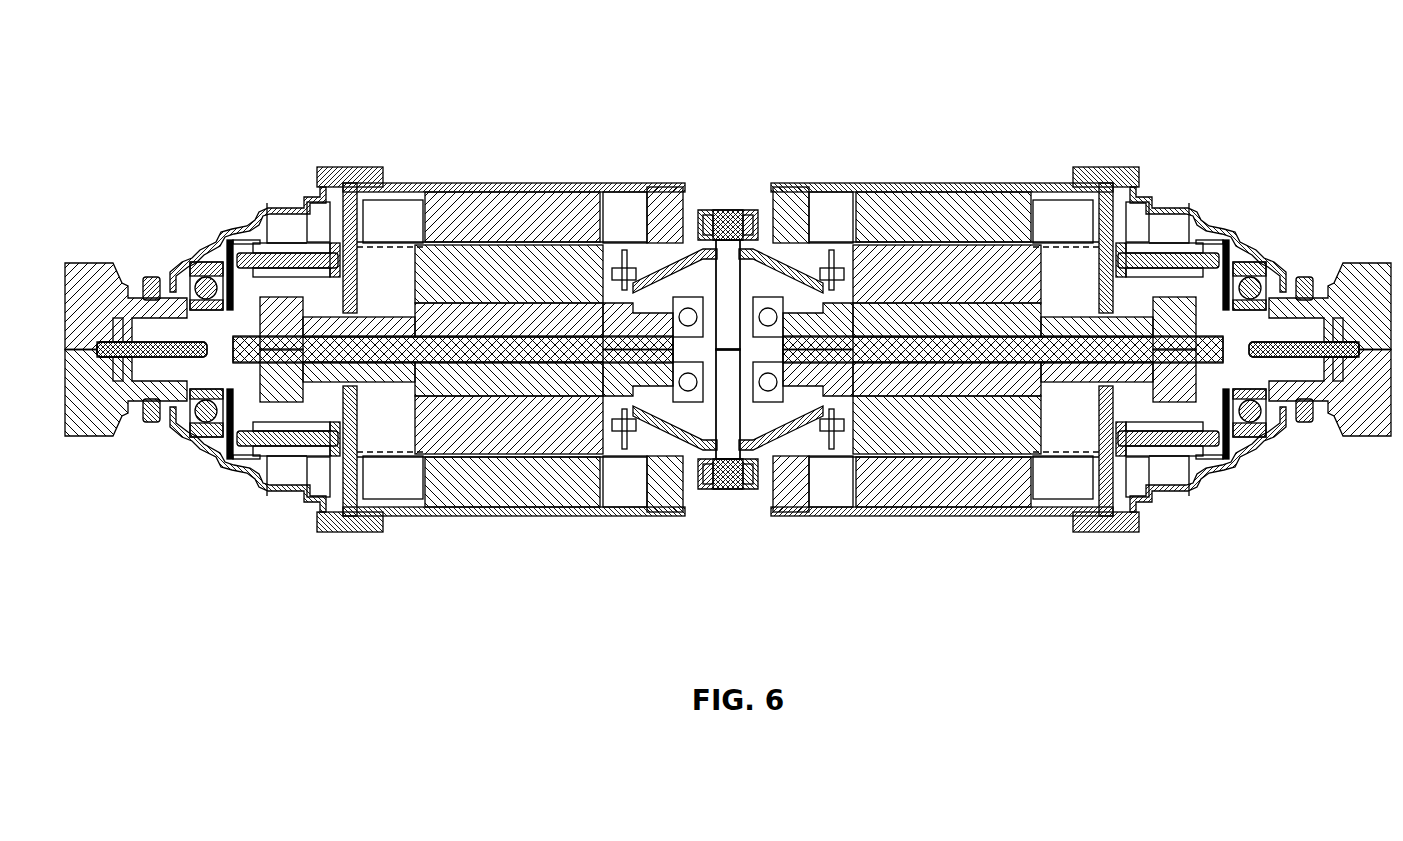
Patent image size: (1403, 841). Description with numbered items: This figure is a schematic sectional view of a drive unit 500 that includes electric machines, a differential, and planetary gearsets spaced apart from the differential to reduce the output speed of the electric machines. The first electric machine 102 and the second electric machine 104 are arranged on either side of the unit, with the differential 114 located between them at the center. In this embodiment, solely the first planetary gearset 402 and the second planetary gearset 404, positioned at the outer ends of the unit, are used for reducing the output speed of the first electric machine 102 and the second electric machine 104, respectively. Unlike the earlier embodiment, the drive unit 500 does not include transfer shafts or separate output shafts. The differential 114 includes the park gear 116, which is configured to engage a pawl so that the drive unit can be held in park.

The drive unit 500 is at (728, 280).
The first planetary gearset 402 is at (286, 227).
The second planetary gearset 404 is at (1170, 227).
The first electric machine 102 is at (498, 237).
The second electric machine 104 is at (928, 237).
The differential 114 is at (748, 193).
The park gear 116 is at (718, 265).